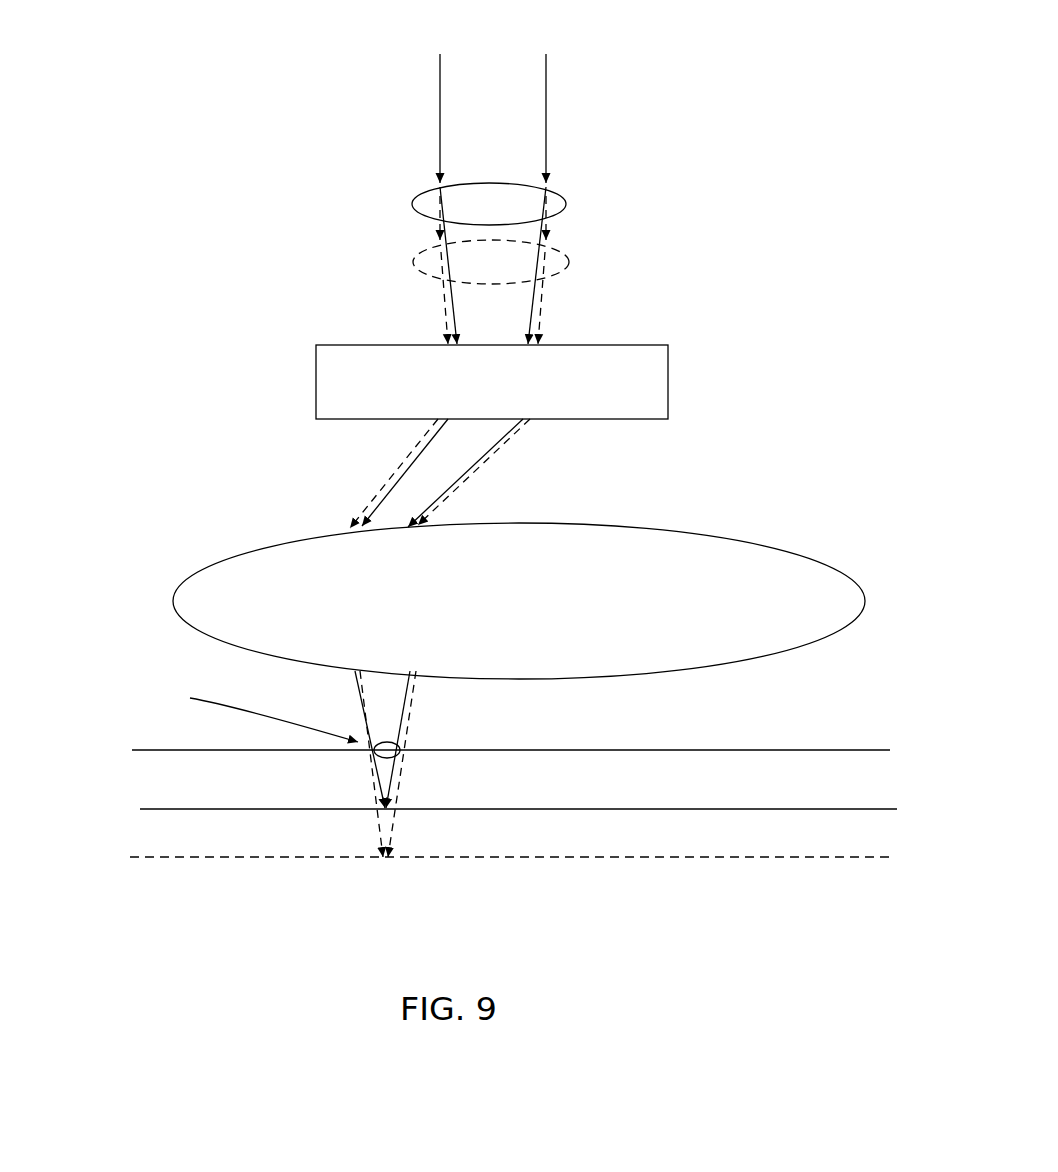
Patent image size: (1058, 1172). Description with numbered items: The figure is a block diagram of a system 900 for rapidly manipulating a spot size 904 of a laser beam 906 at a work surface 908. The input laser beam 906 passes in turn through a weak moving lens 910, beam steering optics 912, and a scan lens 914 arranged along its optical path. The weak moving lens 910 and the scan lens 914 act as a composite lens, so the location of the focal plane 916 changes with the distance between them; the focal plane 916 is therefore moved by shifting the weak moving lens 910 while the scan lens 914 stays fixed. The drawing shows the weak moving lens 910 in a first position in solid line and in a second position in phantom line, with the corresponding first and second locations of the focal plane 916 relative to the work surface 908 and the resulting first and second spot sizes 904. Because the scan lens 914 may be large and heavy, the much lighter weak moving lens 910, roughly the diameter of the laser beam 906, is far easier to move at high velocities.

The system 900 is at (266, 98).
The spot size 904 is at (418, 743).
The laser beam 906 is at (585, 122).
The work surface 908 is at (780, 751).
The weak moving lens 910 is at (415, 260).
The beam steering optics 912 is at (668, 373).
The scan lens 914 is at (692, 533).
The focal plane 916 is at (165, 856).